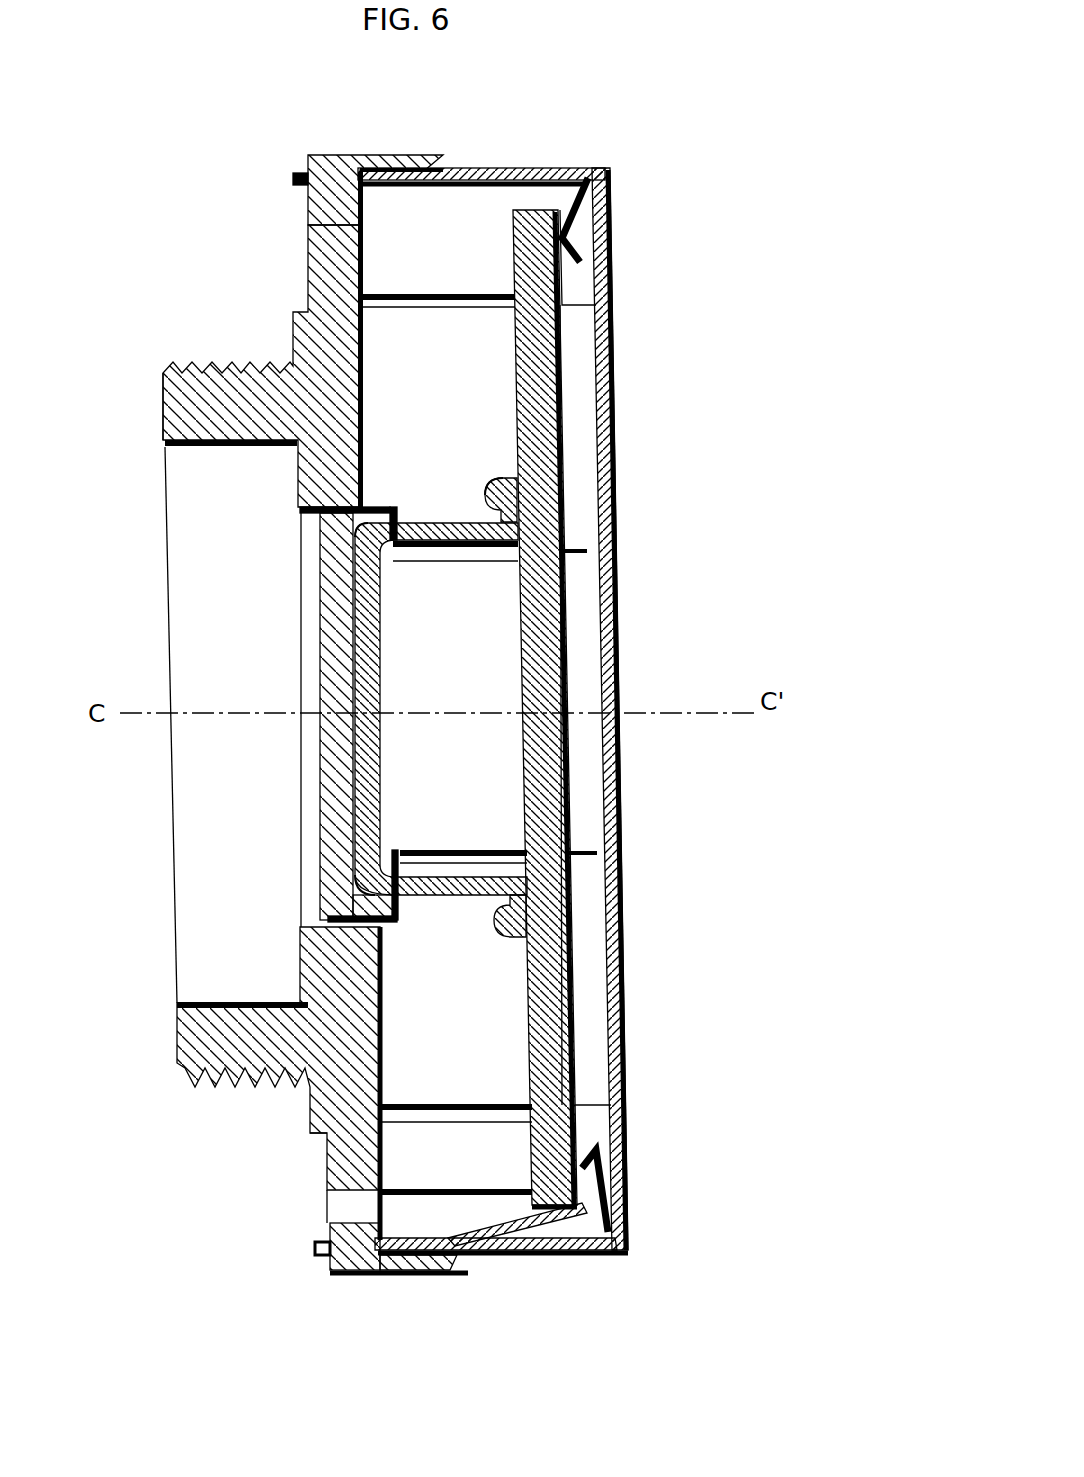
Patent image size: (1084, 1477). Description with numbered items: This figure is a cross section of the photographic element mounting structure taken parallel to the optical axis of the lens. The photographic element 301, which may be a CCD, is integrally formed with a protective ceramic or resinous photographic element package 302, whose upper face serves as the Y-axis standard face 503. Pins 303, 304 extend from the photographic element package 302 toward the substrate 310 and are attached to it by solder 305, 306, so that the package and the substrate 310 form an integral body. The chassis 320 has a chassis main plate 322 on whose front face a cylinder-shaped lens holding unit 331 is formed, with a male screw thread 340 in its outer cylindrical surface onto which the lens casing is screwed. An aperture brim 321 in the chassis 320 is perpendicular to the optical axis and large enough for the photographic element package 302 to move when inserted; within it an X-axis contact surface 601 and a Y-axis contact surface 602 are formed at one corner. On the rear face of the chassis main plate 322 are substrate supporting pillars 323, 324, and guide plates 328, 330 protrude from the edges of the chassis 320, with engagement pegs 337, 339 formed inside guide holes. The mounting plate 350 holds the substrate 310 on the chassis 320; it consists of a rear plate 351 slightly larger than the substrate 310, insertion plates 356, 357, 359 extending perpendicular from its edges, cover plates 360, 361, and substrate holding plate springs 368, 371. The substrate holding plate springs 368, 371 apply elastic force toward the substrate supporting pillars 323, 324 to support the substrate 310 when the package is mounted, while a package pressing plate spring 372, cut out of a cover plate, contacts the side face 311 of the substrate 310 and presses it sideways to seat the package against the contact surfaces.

The photographic element 301 is at (322, 765).
The photographic element package 302 is at (330, 868).
The pin 303 is at (470, 572).
The pin 304 is at (465, 875).
The solder 305 is at (482, 465).
The solder 306 is at (493, 927).
The substrate 310 is at (585, 392).
The side face 311 is at (580, 1257).
The chassis 320 is at (304, 1108).
The aperture brim 321 is at (330, 905).
The chassis main plate 322 is at (347, 1140).
The substrate supporting pillar 323 is at (445, 245).
The substrate supporting pillar 324 is at (445, 1165).
The guide plate 328 is at (423, 1275).
The guide plate 330 is at (398, 155).
The lens holding unit 331 is at (163, 410).
The engagement peg 337 is at (357, 1245).
The engagement peg 339 is at (343, 188).
The male screw thread 340 is at (232, 363).
The mounting plate 350 is at (614, 296).
The rear plate 351 is at (610, 343).
The insertion plate 356 is at (470, 680).
The insertion plate 357 is at (553, 1255).
The insertion plate 359 is at (535, 167).
The cover plate 360 is at (462, 408).
The cover plate 361 is at (470, 1052).
The substrate holding plate spring 368 is at (607, 1183).
The substrate holding plate spring 371 is at (612, 237).
The package pressing plate spring 372 is at (607, 1257).
The Y-axis standard face 503 is at (488, 512).
The X-axis contact surface 601 is at (307, 616).
The Y-axis contact surface 602 is at (305, 525).